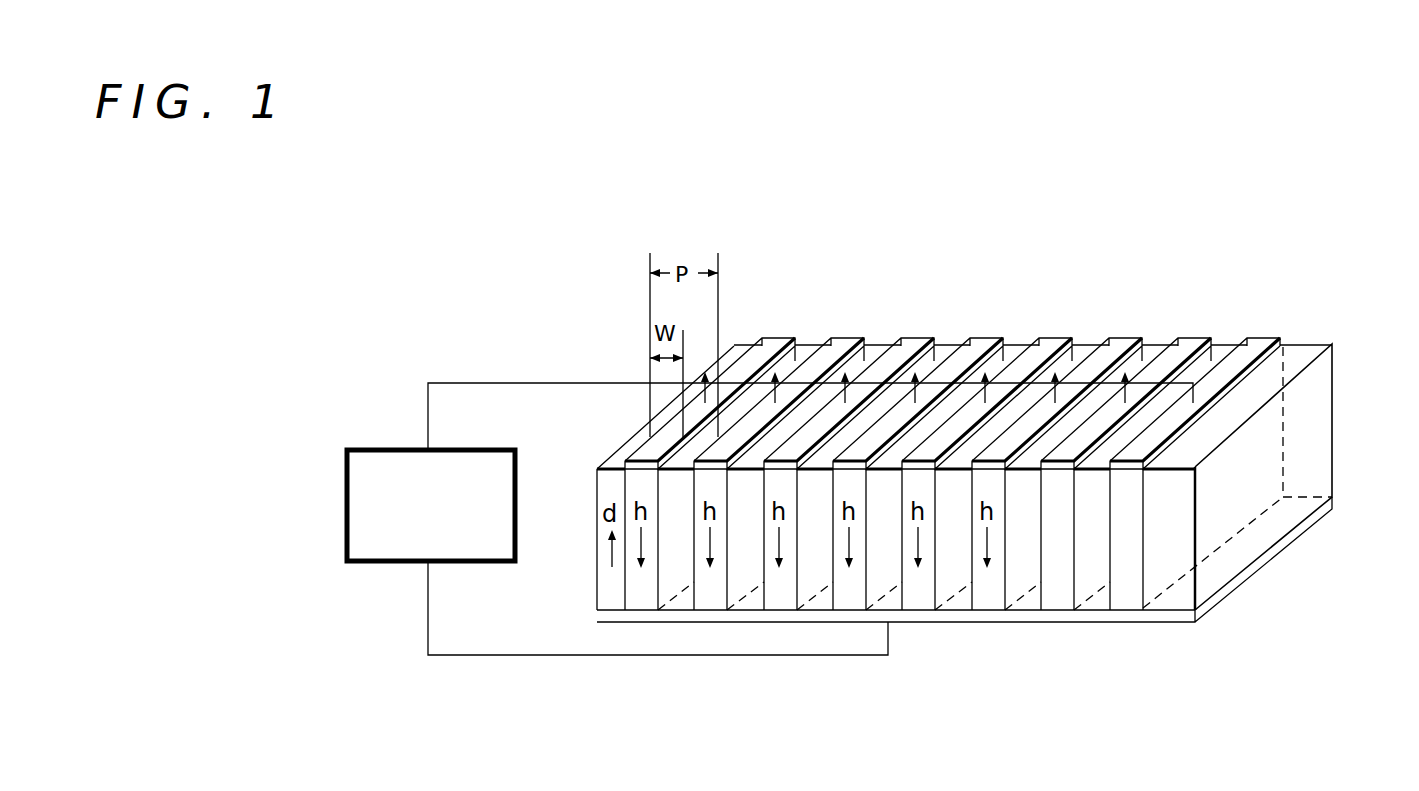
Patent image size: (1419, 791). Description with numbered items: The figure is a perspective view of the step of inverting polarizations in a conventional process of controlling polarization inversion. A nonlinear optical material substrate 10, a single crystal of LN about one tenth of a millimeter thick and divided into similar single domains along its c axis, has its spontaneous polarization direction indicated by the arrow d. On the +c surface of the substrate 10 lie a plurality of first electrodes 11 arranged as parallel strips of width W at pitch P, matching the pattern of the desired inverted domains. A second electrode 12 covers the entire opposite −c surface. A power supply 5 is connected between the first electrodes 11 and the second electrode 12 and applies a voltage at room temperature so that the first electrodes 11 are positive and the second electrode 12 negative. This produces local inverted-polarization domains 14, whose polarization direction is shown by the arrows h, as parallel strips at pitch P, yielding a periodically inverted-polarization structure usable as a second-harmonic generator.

The power supply 5 is at (383, 450).
The nonlinear optical material substrate 10 is at (1312, 440).
The first electrodes 11 is at (975, 350).
The second electrode 12 is at (1136, 617).
The local inverted-polarization domains 14 is at (992, 595).